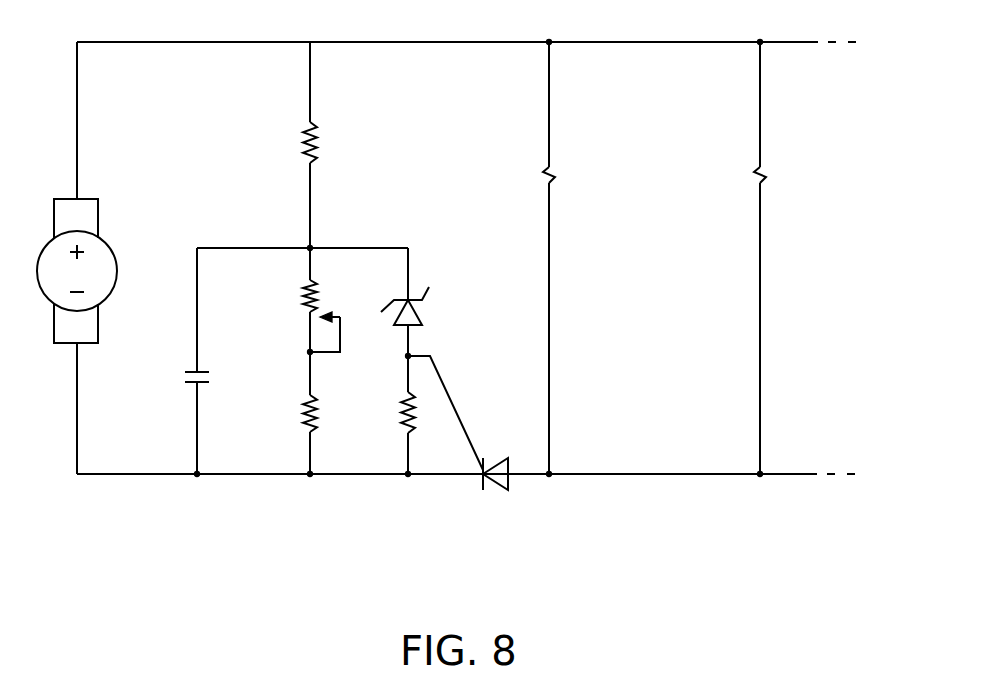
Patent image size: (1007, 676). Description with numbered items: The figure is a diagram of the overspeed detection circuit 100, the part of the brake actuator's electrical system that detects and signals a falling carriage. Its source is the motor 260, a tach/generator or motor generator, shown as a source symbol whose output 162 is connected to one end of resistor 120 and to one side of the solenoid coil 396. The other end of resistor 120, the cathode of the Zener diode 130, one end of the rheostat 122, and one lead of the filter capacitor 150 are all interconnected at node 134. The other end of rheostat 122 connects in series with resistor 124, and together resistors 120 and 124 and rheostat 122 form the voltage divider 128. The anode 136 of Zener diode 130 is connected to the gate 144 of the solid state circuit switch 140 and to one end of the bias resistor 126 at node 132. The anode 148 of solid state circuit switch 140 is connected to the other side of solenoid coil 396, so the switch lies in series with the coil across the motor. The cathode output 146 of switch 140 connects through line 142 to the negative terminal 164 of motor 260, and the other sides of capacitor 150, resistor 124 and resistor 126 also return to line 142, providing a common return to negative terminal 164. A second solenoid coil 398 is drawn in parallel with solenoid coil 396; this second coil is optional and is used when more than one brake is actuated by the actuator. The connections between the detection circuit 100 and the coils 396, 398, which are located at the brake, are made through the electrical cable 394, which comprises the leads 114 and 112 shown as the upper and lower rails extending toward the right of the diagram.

The overspeed detection circuit 100 is at (592, 336).
The lead 112 is at (550, 428).
The lead 114 is at (380, 42).
The resistor 120 is at (318, 140).
The rheostat 122 is at (305, 300).
The resistor 124 is at (303, 420).
The bias resistor 126 is at (401, 420).
The voltage divider 128 is at (313, 258).
The Zener diode 130 is at (420, 312).
The node 132 is at (410, 353).
The node 134 is at (311, 247).
The anode 136 is at (395, 325).
The solid state circuit switch 140 is at (510, 487).
The line 142 is at (254, 478).
The gate 144 is at (482, 455).
The cathode output 146 is at (476, 478).
The anode 148 is at (514, 470).
The filter capacitor 150 is at (184, 376).
The output 162 is at (77, 160).
The negative terminal 164 is at (78, 442).
The motor 260 is at (103, 235).
The electrical cable 394 is at (794, 452).
The solenoid coil 396 is at (553, 176).
The second solenoid coil 398 is at (764, 176).